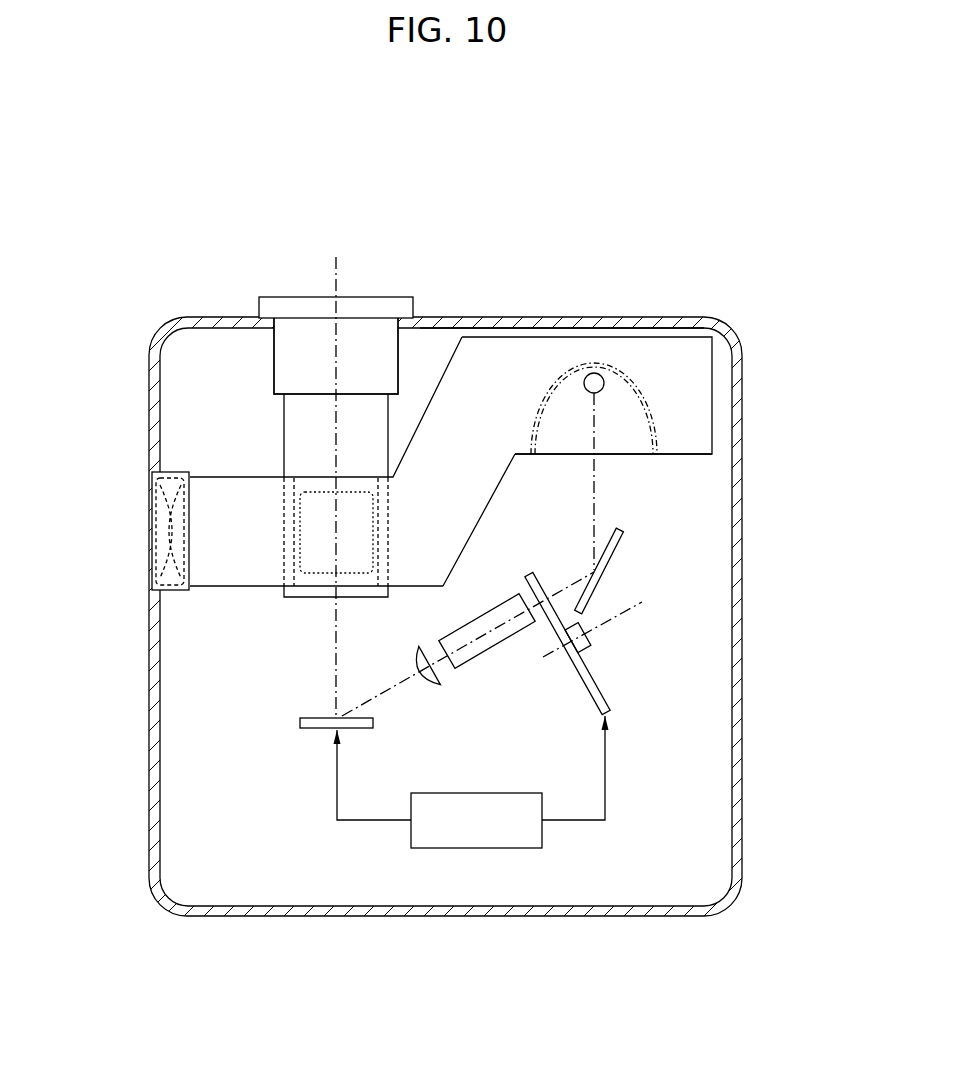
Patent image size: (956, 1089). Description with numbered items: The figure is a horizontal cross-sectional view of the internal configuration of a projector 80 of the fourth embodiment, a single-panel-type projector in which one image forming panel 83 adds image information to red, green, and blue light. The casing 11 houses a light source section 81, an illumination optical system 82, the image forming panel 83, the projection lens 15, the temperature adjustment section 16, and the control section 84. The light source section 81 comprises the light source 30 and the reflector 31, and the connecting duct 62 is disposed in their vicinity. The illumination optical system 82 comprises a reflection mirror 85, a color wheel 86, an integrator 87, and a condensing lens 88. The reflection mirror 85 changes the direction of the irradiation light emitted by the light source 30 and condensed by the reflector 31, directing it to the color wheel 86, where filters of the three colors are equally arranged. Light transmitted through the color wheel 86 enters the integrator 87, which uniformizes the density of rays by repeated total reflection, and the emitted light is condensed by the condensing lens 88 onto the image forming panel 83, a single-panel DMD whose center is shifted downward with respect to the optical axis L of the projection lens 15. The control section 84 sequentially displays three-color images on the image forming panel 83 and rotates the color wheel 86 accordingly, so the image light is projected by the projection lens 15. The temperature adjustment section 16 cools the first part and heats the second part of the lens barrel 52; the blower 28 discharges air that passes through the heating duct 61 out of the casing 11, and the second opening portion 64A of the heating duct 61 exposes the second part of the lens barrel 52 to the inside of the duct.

The casing 11 is at (643, 328).
The projection lens 15 is at (298, 296).
The temperature adjustment section 16 is at (692, 343).
The blower 28 is at (160, 493).
The light source 30 is at (582, 362).
The reflector 31 is at (653, 408).
The lens barrel 52 is at (302, 401).
The heating duct 61 is at (475, 385).
The connecting duct 62 is at (687, 452).
The second opening portion 64A is at (305, 492).
The projector 80 is at (365, 226).
The light source section 81 is at (633, 463).
The illumination optical system 82 is at (533, 640).
The image forming panel 83 is at (300, 720).
The control section 84 is at (485, 793).
The reflection mirror 85 is at (613, 556).
The color wheel 86 is at (600, 682).
The integrator 87 is at (480, 642).
The condensing lens 88 is at (438, 684).
The optical axis L is at (339, 276).